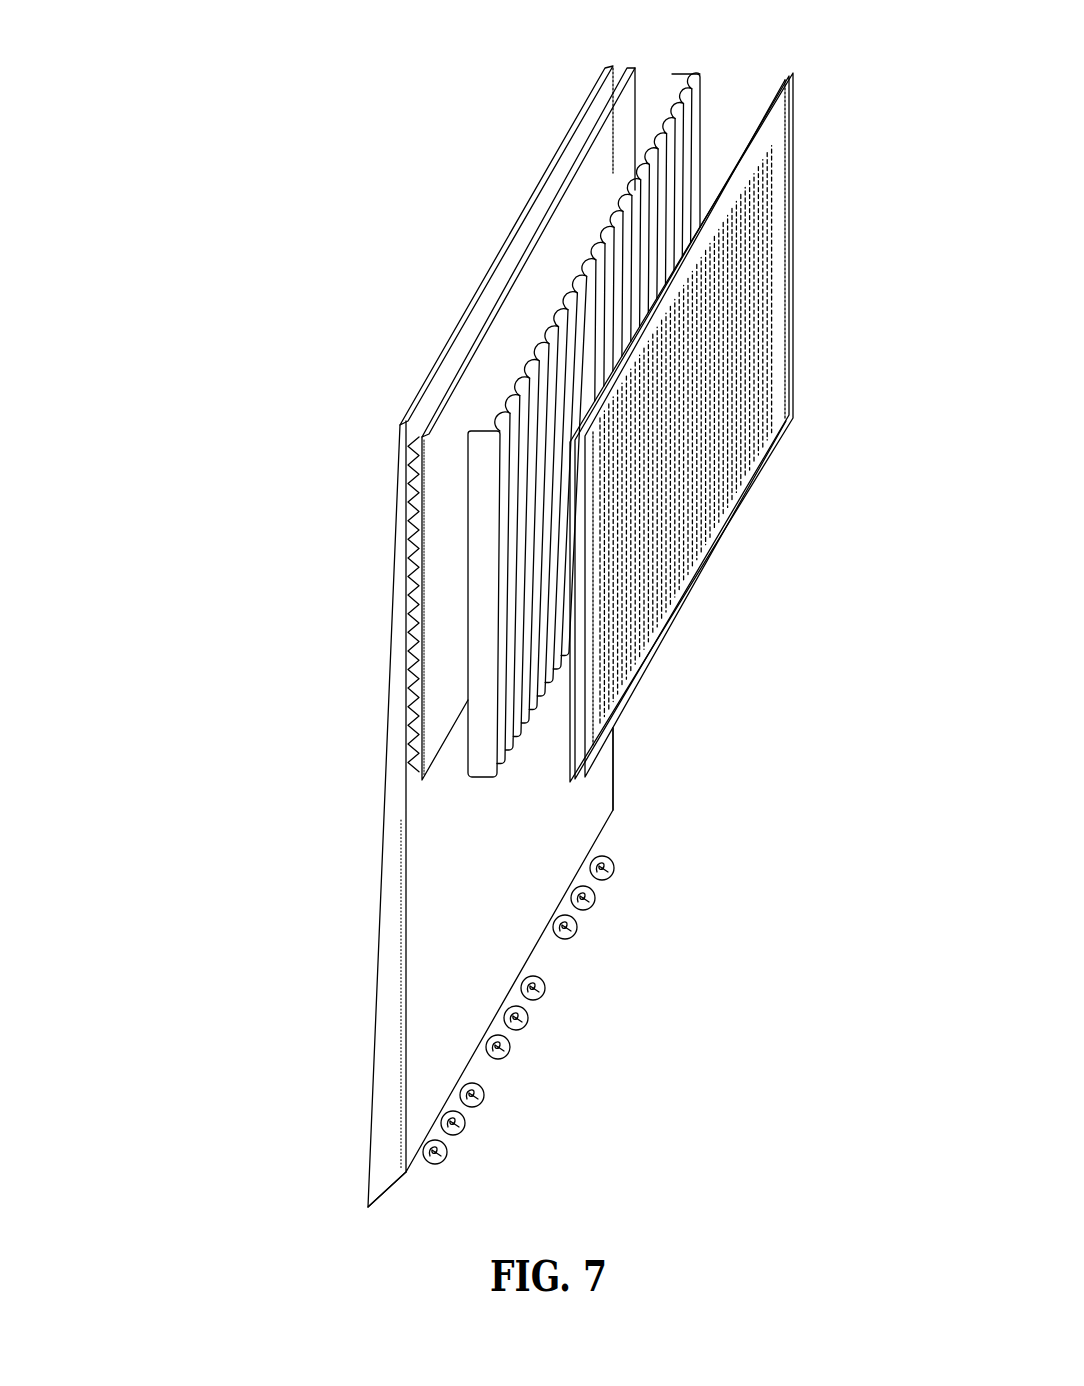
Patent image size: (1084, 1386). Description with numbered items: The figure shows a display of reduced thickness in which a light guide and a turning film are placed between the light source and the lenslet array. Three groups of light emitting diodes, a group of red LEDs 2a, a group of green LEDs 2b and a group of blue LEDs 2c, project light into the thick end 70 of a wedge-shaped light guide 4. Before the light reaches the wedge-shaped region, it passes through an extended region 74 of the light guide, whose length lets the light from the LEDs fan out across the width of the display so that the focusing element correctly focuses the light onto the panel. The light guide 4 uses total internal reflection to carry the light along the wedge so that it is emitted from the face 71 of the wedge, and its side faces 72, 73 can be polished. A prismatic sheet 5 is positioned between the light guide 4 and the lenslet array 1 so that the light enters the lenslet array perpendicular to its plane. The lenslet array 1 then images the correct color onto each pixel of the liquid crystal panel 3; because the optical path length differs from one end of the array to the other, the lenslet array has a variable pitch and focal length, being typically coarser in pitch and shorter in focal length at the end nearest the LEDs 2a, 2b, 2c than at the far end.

The lenslet array 1 is at (702, 135).
The red light emitting diodes 2a is at (642, 850).
The green light emitting diodes 2b is at (575, 965).
The blue light emitting diodes 2c is at (508, 1085).
The liquid crystal panel 3 is at (799, 303).
The wedge-shaped light guide 4 is at (492, 260).
The prismatic sheet 5 is at (635, 95).
The thick end of the wedge 70 is at (382, 1193).
The emitting face of the wedge 71 is at (457, 393).
The side face of the light guide 72 is at (358, 990).
The side face of the light guide 73 is at (622, 778).
The extended region of the light guide 74 is at (462, 874).